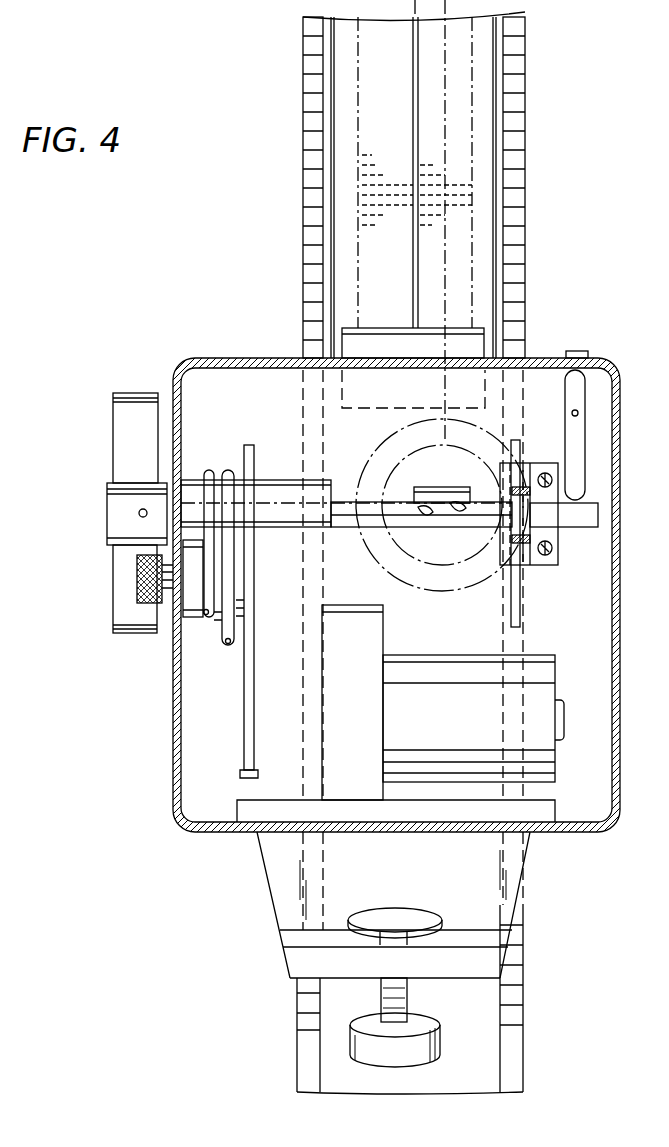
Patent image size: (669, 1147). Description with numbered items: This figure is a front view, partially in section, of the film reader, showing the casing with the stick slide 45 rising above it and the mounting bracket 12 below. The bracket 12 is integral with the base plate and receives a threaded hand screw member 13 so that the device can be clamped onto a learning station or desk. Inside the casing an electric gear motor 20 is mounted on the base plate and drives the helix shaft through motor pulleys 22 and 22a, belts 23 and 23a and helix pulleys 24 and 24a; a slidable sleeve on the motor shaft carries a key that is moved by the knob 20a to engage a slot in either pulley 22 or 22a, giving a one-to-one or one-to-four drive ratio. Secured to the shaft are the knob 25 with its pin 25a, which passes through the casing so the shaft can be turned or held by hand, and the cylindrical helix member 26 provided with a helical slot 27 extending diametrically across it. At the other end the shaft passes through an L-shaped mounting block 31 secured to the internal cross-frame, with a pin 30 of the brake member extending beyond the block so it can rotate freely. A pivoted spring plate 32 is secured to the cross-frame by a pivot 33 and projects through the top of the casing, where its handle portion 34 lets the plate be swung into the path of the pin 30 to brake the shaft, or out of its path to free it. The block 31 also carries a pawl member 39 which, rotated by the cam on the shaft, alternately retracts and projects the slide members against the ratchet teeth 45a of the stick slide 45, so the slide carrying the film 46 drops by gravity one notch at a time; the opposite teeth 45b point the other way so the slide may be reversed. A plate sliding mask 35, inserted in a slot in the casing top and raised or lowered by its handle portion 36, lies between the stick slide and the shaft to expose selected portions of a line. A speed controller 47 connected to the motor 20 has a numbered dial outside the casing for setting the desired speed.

The mounting bracket 12 is at (274, 880).
The hand screw member 13 is at (408, 1010).
The electric gear motor 20 is at (462, 729).
The knob 20a is at (138, 585).
The motor pulley 22 is at (190, 608).
The motor pulley 22a is at (238, 624).
The belt 23 is at (207, 616).
The belt 23a is at (228, 648).
The helix pulley 24 is at (210, 574).
The helix pulley 24a is at (240, 470).
The knob 25 is at (102, 522).
The pin 25a is at (140, 516).
The cylindrical helix member 26 is at (376, 527).
The helical slot 27 is at (422, 518).
The pin 30 is at (576, 530).
The L-shaped mounting block 31 is at (540, 565).
The pivoted spring plate 32 is at (595, 435).
The pivot 33 is at (573, 416).
The handle portion 34 is at (580, 351).
The plate sliding mask 35 is at (376, 408).
The handle portion 36 is at (370, 330).
The pawl member 39 is at (521, 617).
The stick slide 45 is at (422, 220).
The ratchet teeth 45a is at (527, 156).
The ratchet teeth 45b is at (303, 120).
The film 46 is at (388, 117).
The speed controller 47 is at (124, 449).